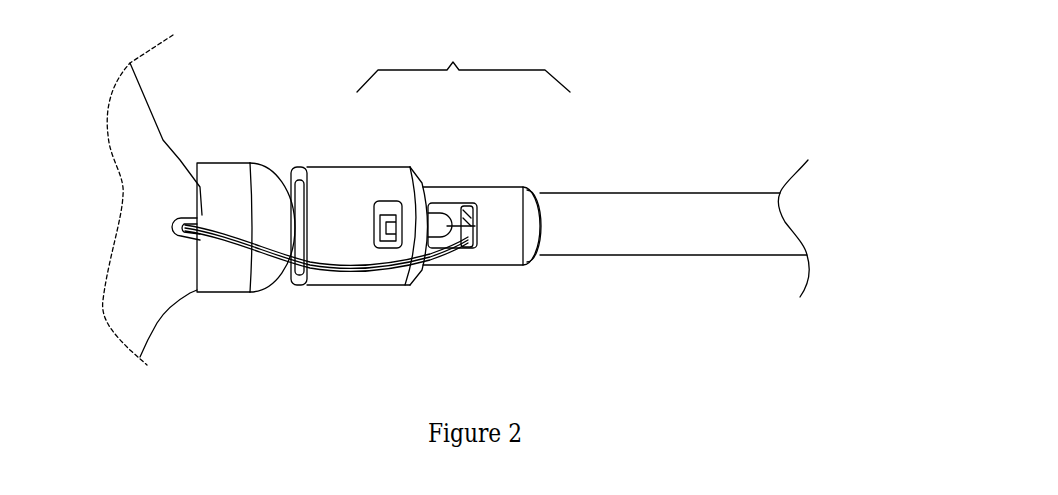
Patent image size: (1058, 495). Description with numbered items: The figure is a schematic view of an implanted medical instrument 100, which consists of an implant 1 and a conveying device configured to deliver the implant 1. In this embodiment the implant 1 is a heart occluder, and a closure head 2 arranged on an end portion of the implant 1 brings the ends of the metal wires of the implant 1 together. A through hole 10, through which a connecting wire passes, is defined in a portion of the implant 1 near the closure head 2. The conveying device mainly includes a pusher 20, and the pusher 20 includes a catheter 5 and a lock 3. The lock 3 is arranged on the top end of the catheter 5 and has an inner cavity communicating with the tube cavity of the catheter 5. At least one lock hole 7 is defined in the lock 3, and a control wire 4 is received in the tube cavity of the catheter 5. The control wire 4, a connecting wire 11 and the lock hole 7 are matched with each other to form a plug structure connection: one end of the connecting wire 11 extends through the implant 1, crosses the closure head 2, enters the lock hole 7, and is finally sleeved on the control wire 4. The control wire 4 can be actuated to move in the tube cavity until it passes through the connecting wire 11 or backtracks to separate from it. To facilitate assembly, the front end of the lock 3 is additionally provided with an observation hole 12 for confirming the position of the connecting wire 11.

The implanted medical instrument 100 is at (705, 85).
The through hole 10 is at (192, 233).
The implant 1 is at (175, 168).
The closure head 2 is at (222, 172).
The lock 3 is at (323, 167).
The observation hole 12 is at (382, 200).
The control wire 4 is at (450, 218).
The lock hole 7 is at (465, 247).
The catheter 5 is at (538, 195).
The connecting wire 11 is at (343, 272).
The pusher 20 is at (463, 60).